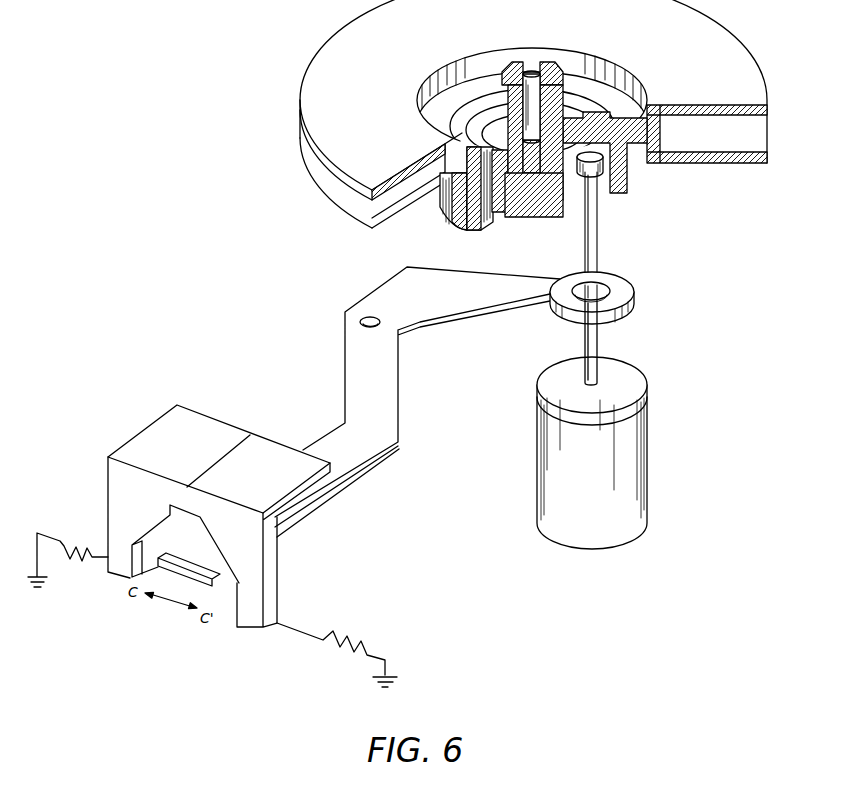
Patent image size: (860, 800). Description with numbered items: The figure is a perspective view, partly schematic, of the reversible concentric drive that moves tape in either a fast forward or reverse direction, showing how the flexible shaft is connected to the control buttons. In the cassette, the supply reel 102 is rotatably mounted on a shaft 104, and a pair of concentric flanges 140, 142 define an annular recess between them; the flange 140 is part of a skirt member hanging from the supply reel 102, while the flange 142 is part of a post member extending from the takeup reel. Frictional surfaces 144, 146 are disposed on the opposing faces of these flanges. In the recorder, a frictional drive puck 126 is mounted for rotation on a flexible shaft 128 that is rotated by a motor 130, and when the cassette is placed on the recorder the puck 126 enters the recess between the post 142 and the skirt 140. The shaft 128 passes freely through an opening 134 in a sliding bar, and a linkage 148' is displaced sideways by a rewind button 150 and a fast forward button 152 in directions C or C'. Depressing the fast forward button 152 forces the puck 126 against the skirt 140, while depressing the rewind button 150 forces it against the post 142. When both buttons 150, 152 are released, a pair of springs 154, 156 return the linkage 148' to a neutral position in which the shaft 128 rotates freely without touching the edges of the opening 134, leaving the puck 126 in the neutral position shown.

The supply reel 102 is at (343, 53).
The shaft 104 is at (527, 70).
The frictional drive puck 126 is at (601, 162).
The flexible shaft 128 is at (600, 341).
The motor 130 is at (638, 428).
The opening 134 is at (602, 286).
The flange 140 is at (460, 210).
The flange 142 is at (552, 182).
The frictional surface 144 is at (480, 210).
The frictional surface 146 is at (508, 208).
The linkage 148' is at (417, 402).
The rewind button 150 is at (193, 425).
The fast forward button 152 is at (272, 452).
The spring 154 is at (62, 541).
The spring 156 is at (334, 640).